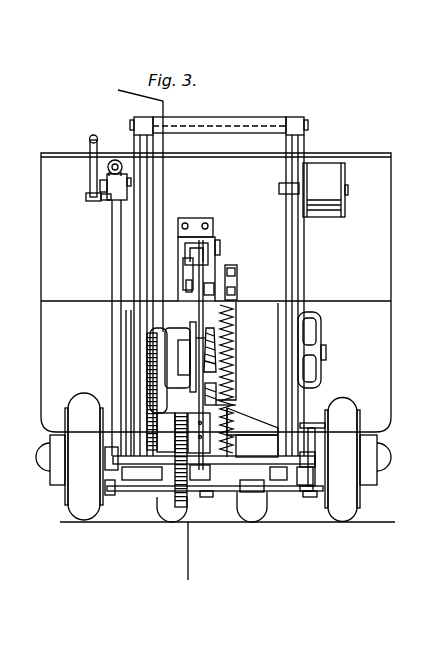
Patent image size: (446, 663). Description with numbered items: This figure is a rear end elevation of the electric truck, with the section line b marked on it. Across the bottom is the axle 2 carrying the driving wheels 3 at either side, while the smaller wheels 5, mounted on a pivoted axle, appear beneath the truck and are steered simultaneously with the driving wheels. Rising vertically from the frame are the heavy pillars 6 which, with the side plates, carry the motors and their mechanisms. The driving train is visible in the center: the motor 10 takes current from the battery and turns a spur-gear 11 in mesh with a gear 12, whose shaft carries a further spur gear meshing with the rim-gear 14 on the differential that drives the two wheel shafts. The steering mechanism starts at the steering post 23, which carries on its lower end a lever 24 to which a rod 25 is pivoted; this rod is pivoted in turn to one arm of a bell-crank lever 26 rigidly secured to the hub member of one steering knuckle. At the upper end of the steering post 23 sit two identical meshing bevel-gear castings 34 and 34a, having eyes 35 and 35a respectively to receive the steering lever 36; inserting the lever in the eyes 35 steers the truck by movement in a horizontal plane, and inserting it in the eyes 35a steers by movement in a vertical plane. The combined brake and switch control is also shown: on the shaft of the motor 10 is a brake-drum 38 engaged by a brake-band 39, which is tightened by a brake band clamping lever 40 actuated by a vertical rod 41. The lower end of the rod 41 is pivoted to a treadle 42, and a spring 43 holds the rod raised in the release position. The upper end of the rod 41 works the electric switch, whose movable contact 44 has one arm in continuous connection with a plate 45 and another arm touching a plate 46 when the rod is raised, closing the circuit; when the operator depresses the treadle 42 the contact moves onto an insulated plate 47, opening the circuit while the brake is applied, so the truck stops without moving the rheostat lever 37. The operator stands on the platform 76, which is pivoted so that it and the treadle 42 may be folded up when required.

The axle 2 is at (216, 306).
The driving wheels 3 is at (68, 508).
The wheels 5 is at (170, 521).
The pillars 6 is at (135, 258).
The motor 10 is at (247, 378).
The spur-gear 11 is at (147, 347).
The gear 12 is at (148, 387).
The rim-gear 14 is at (176, 503).
The steering post 23 is at (112, 226).
The lever 24 is at (117, 490).
The rod 25 is at (252, 496).
The bell-crank lever 26 is at (298, 492).
The bevel-gear casting 34 is at (128, 183).
The bevel-gear casting 34a is at (105, 198).
The eyes 35 is at (115, 160).
The eyes 35a is at (98, 186).
The steering lever 36 is at (90, 141).
The rheostat lever 37 is at (281, 188).
The brake-drum 38 is at (180, 350).
The brake-band 39 is at (236, 328).
The brake band clamping lever 40 is at (208, 378).
The vertical rod 41 is at (210, 340).
The treadle 42 is at (230, 424).
The spring 43 is at (236, 390).
The movable contact 44 is at (183, 266).
The plate 45 is at (186, 290).
The plate 46 is at (198, 286).
The insulated plate 47 is at (213, 293).
The platform 76 is at (115, 458).
The section line b— b is at (146, 340).